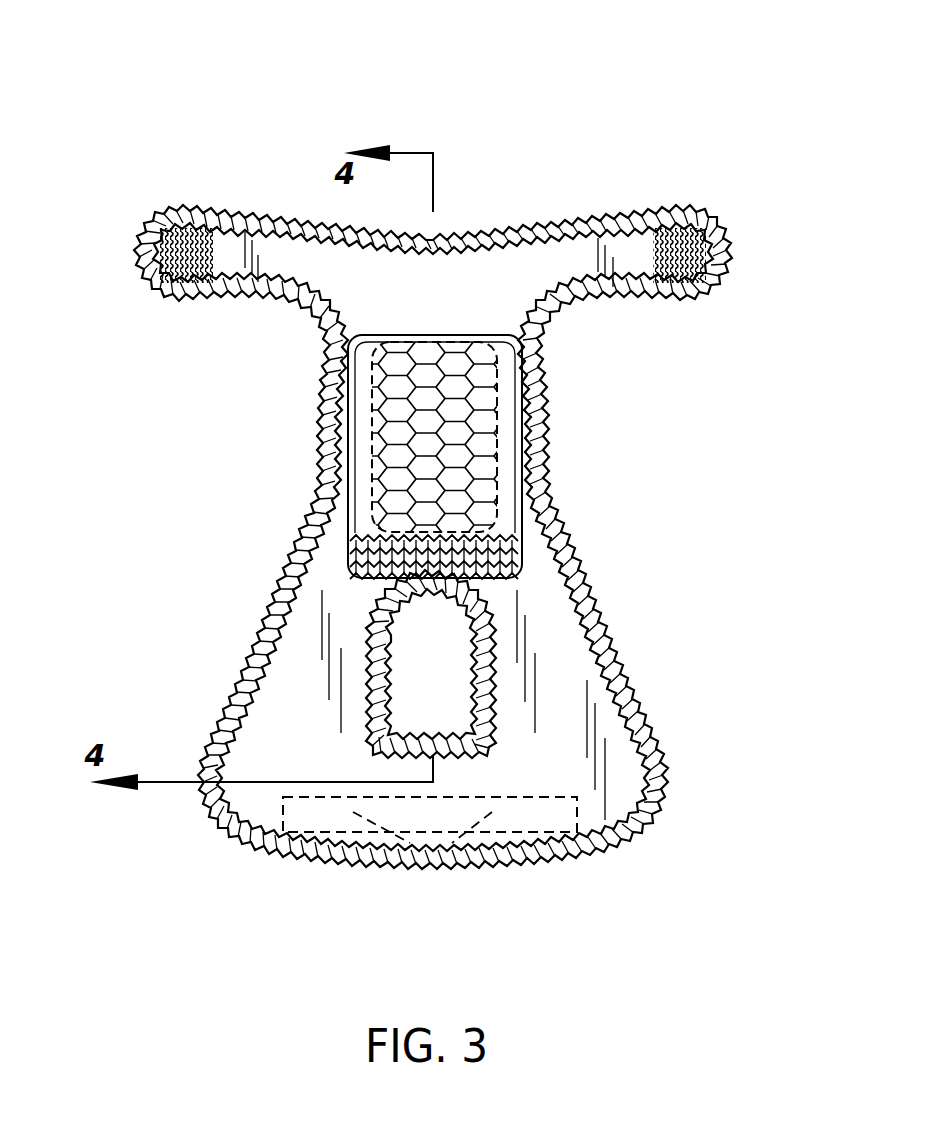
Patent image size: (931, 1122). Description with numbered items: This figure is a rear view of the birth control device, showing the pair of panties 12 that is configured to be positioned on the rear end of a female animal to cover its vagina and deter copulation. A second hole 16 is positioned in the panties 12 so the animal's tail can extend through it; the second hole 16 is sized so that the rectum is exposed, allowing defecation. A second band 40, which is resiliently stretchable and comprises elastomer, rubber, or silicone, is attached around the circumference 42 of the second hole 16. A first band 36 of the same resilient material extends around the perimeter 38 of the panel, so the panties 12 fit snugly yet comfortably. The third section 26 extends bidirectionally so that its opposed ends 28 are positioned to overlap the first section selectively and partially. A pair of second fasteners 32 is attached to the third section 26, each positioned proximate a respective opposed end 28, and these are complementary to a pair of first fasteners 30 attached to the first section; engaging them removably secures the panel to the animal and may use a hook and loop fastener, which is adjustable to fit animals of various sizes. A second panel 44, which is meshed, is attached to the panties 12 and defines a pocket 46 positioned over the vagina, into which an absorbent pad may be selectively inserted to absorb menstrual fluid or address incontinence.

The pair of panties 12 is at (573, 752).
The second hole 16 is at (427, 680).
The third section 26 is at (222, 288).
The opposed ends 28 is at (726, 247).
The first fasteners 30 is at (417, 847).
The second fasteners 32 is at (651, 207).
The first band 36 is at (287, 587).
The perimeter 38 is at (270, 612).
The second band 40 is at (480, 612).
The circumference 42 is at (484, 648).
The second panel 44 is at (440, 400).
The pocket 46 is at (437, 453).